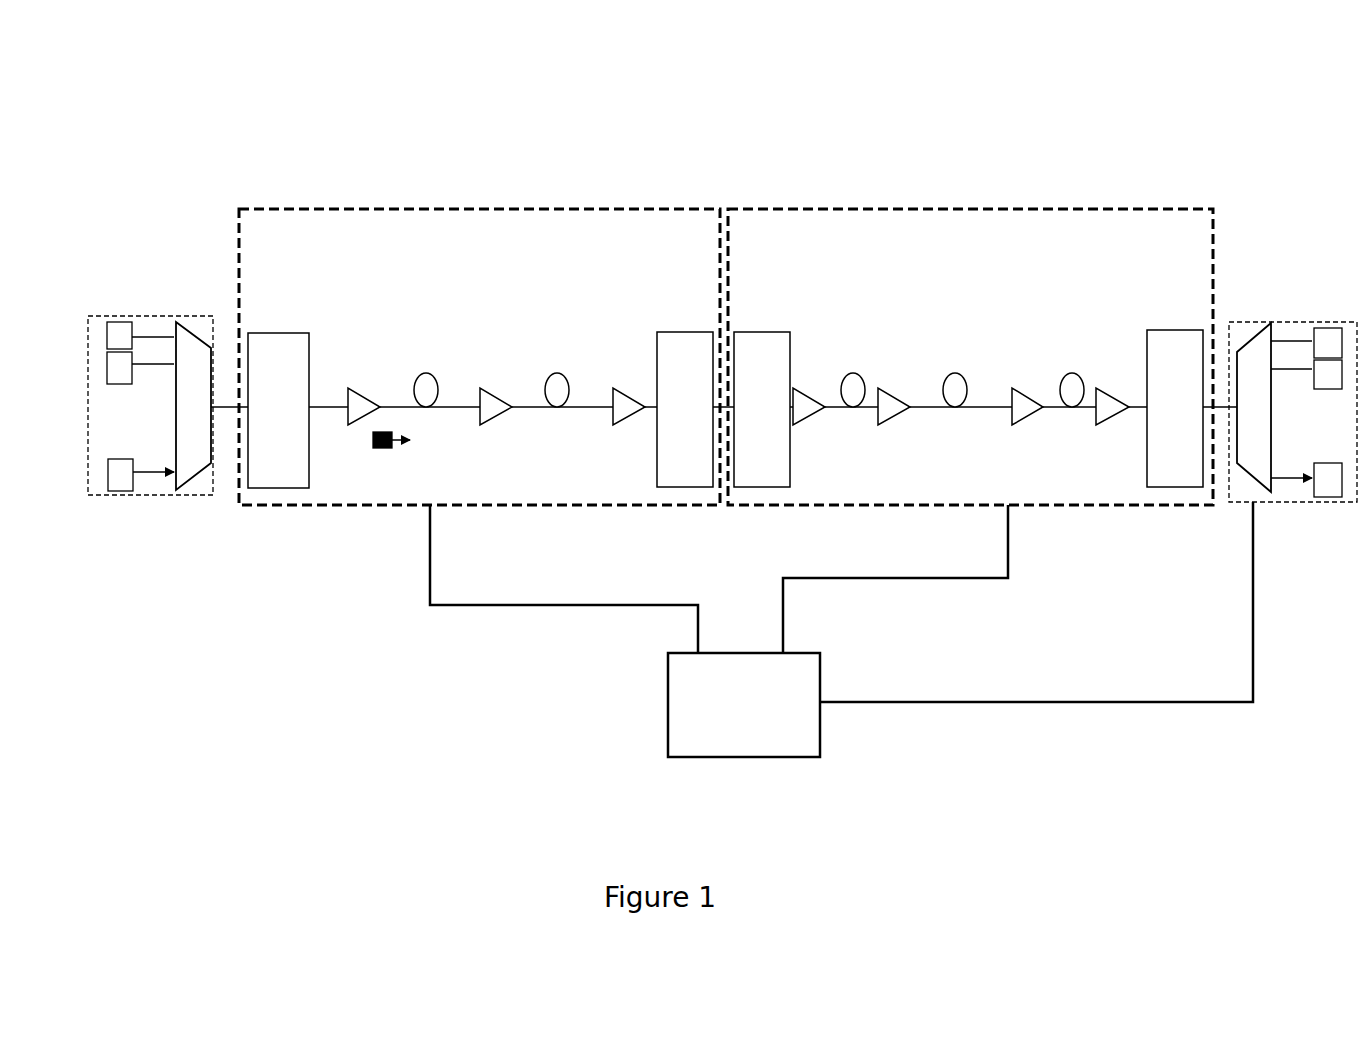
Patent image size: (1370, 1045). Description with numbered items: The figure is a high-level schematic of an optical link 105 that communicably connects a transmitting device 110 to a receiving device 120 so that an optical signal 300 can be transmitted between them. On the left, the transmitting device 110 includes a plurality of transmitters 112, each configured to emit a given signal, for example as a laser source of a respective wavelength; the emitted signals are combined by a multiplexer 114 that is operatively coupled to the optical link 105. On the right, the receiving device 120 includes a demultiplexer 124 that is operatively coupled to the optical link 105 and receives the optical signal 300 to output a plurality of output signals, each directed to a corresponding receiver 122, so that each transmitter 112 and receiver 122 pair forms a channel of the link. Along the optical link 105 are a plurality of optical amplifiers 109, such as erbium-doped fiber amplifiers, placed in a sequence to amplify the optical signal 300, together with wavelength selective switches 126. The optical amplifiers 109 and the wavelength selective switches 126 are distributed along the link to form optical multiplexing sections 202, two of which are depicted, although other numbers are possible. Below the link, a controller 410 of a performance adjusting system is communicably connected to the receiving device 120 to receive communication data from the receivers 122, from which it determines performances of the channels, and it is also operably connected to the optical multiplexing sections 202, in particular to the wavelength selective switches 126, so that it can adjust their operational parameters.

The optical link 105 is at (707, 148).
The optical multiplexing section 202 is at (470, 209).
The wavelength selective switch 126 is at (293, 333).
The optical amplifier 109 is at (490, 425).
The optical signal 300 is at (381, 449).
The controller 410 is at (841, 629).
The transmitting device 110 is at (190, 497).
The transmitter 112 is at (118, 322).
The multiplexer 114 is at (193, 330).
The receiving device 120 is at (1272, 505).
The receiver 122 is at (1330, 328).
The demultiplexer 124 is at (1252, 345).